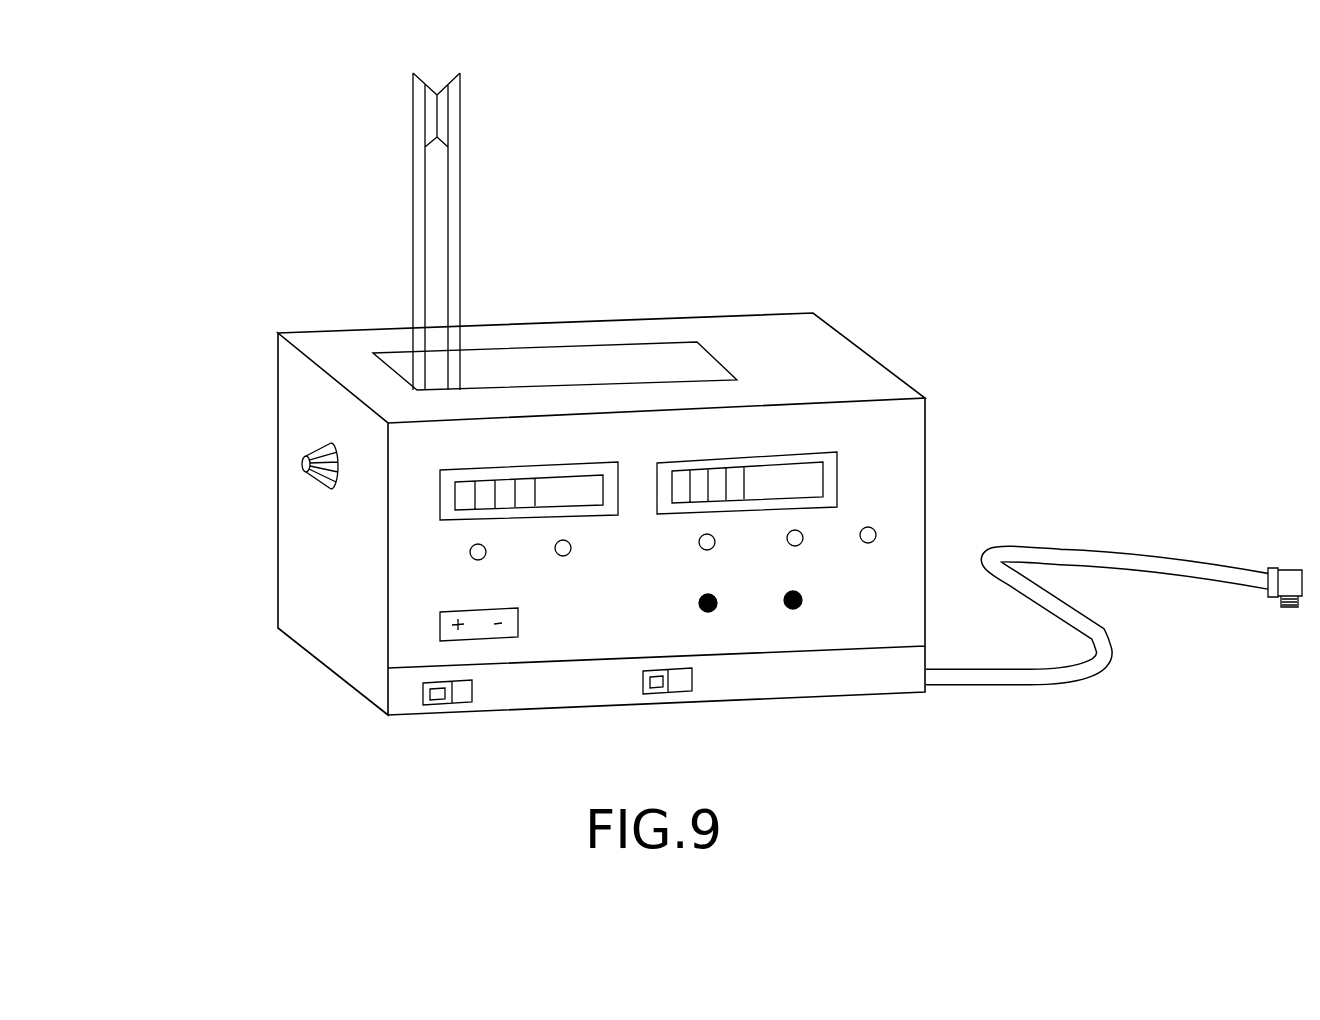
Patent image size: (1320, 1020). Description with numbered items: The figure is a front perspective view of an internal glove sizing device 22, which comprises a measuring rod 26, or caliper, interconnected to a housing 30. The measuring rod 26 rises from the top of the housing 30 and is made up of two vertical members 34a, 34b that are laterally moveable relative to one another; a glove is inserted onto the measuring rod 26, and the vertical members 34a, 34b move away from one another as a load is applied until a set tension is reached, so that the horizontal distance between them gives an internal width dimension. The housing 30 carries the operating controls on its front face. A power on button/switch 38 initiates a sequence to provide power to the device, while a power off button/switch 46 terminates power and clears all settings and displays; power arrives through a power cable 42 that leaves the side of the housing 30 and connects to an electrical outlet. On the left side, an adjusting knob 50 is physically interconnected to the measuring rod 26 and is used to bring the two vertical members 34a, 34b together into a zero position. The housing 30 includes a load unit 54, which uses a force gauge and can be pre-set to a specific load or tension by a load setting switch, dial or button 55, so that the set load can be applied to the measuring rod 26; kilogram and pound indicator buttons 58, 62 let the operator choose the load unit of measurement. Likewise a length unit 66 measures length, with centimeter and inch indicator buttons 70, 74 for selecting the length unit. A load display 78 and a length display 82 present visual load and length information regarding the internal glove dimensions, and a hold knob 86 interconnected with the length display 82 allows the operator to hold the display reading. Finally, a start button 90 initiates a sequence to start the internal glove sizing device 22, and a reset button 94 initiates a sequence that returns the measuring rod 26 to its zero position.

The internal glove sizing device 22 is at (697, 427).
The measuring rod 26 is at (427, 228).
The housing 30 is at (290, 397).
The vertical member 34a is at (419, 250).
The vertical member 34b is at (455, 277).
The power on button/switch 38 is at (443, 694).
The power cable 42 is at (1025, 685).
The power off button/switch 46 is at (657, 688).
The adjusting knob 50 is at (302, 468).
The load unit 54 is at (553, 372).
The load setting switch, dial or button 55 is at (433, 630).
The kilogram indicator button 58 is at (570, 552).
The pound indicator button 62 is at (470, 558).
The length unit 66 is at (513, 371).
The centimeter indicator button 70 is at (795, 530).
The inch indicator button 74 is at (699, 543).
The load display 78 is at (440, 513).
The length display 82 is at (832, 480).
The hold knob 86 is at (877, 535).
The start button 90 is at (700, 604).
The reset button 94 is at (803, 600).